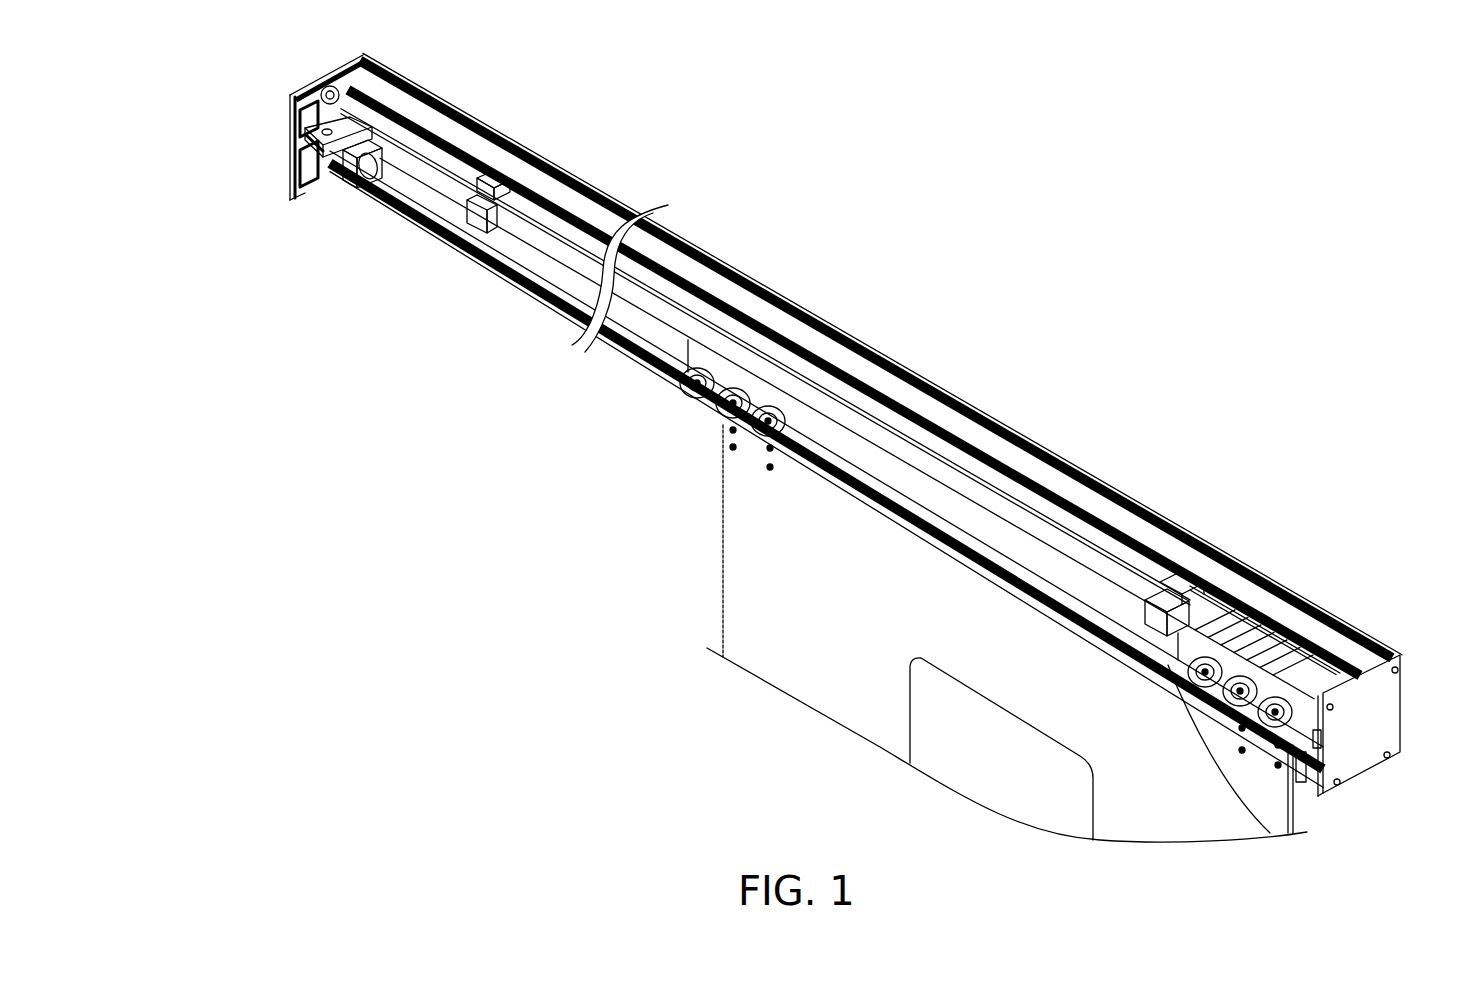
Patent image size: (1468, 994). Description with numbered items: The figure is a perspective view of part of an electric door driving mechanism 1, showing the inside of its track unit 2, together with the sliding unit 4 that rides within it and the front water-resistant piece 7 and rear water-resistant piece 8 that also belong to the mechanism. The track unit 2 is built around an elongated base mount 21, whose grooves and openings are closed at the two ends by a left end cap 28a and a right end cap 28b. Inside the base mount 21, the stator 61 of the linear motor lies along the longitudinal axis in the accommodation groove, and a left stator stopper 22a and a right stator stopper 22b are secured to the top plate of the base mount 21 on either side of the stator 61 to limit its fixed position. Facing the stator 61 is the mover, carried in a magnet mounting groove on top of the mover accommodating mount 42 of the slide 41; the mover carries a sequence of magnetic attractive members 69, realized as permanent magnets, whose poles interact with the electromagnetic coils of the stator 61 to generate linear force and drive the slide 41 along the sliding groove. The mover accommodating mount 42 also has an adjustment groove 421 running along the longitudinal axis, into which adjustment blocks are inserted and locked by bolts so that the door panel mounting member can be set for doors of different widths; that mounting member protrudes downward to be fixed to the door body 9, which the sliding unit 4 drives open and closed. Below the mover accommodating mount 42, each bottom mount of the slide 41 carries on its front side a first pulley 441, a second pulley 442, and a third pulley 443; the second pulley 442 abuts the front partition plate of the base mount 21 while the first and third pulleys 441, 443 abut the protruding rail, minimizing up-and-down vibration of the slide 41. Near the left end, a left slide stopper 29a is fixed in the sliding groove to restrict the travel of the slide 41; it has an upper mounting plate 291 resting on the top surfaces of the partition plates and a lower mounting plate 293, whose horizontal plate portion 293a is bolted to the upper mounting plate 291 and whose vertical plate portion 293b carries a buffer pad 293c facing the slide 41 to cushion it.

The electric door driving mechanism 1 is at (776, 476).
The track unit 2 is at (838, 318).
The base mount 21 is at (1110, 510).
The left stator stopper 22a is at (505, 185).
The right stator stopper 22b is at (1200, 598).
The left end cap 28a is at (290, 88).
The right end cap 28b is at (1390, 705).
The left slide stopper 29a is at (235, 191).
The upper mounting plate 291 is at (313, 128).
The lower mounting plate 293 is at (265, 208).
The horizontal plate portion 293a is at (362, 149).
The vertical plate portion 293b is at (350, 169).
The buffer pad 293c is at (369, 168).
The sliding unit 4 is at (932, 554).
The slide 41 is at (1250, 813).
The mover accommodating mount 42 is at (1278, 637).
The adjustment groove 421 is at (1300, 760).
The first pulley 441 is at (680, 385).
The second pulley 442 is at (718, 414).
The third pulley 443 is at (760, 437).
The stator 61 is at (888, 410).
The magnetic attractive members 69 is at (1320, 660).
The front water-resistant piece 7 is at (398, 212).
The rear water-resistant piece 8 is at (473, 215).
The door body 9 is at (1165, 810).